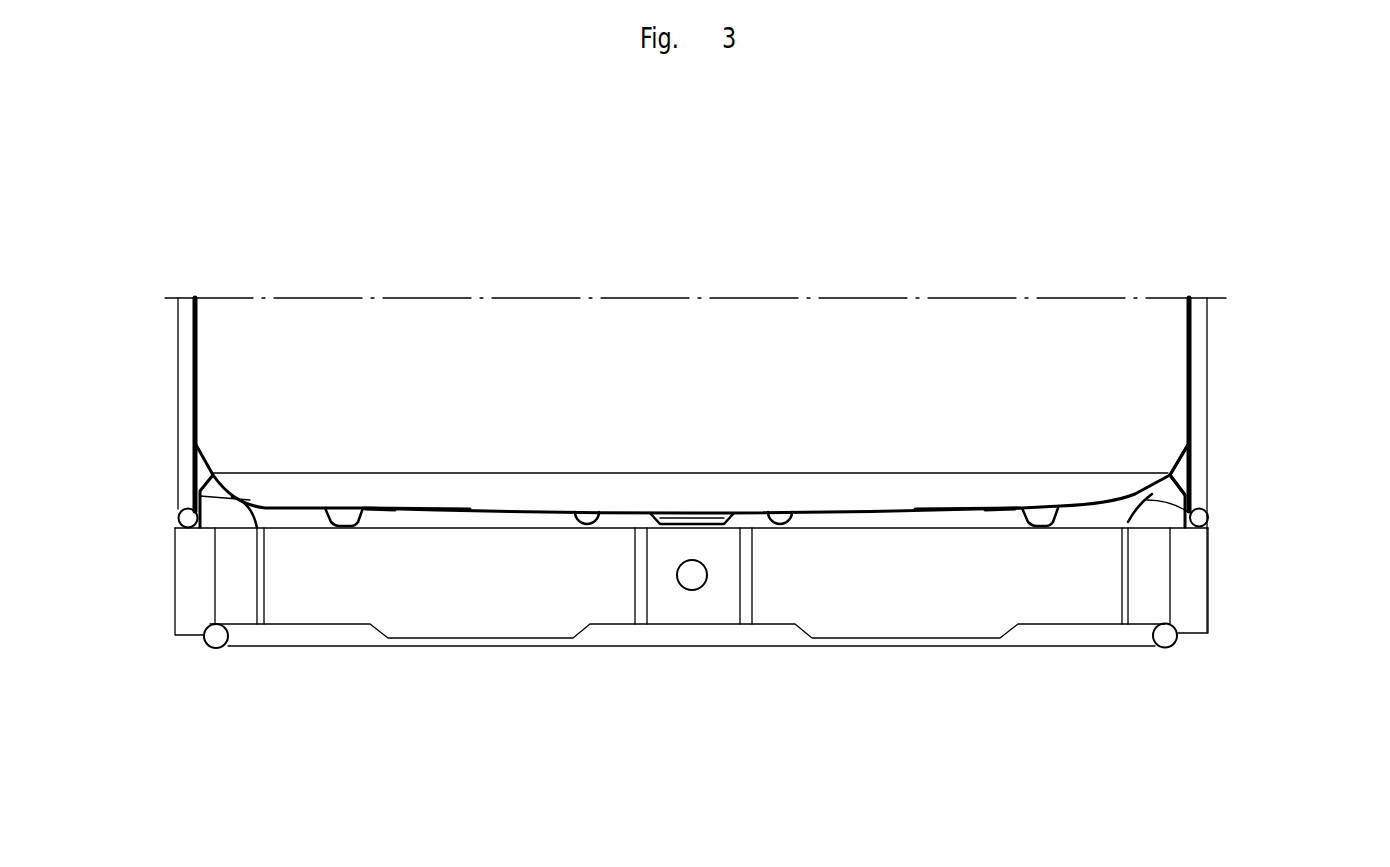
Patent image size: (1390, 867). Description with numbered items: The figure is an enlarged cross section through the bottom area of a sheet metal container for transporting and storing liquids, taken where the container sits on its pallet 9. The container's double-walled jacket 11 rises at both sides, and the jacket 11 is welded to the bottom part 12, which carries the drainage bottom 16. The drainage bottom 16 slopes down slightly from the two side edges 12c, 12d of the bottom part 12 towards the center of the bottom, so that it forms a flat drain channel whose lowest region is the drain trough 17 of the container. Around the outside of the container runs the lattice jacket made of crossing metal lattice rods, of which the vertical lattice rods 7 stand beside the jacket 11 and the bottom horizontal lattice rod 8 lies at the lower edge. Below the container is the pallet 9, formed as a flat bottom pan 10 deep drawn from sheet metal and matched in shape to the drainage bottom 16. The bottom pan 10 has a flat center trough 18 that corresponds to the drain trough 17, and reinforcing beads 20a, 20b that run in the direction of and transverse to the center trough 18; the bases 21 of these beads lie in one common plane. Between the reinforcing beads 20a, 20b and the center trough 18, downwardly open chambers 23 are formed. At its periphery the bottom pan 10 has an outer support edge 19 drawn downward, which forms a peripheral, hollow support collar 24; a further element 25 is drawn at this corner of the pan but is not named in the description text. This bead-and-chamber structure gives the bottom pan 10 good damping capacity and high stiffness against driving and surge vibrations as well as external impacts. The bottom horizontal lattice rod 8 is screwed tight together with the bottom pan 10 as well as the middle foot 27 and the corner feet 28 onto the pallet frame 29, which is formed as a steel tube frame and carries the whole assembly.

The vertical lattice rod 7 is at (1202, 340).
The horizontal lattice rod 8 is at (179, 517).
The pallet 9 is at (1240, 606).
The bottom pan 10 is at (218, 515).
The jacket 11 is at (767, 338).
The bottom part 12 is at (398, 485).
The side edge 12c is at (200, 500).
The side edge 12d is at (1208, 518).
The drainage bottom 16 is at (523, 510).
The drain trough 17 is at (710, 520).
The center trough 18 is at (678, 519).
The outer support edge 19 is at (1180, 503).
The reinforcing bead 20a is at (343, 520).
The reinforcing bead 20b is at (465, 522).
The bead base 21 is at (478, 533).
The chamber 23 is at (390, 527).
The support collar 24 is at (1173, 477).
The sealing ring 25 is at (1206, 528).
The middle foot 27 is at (687, 612).
The corner foot 28 is at (198, 615).
The pallet frame 29 is at (982, 643).